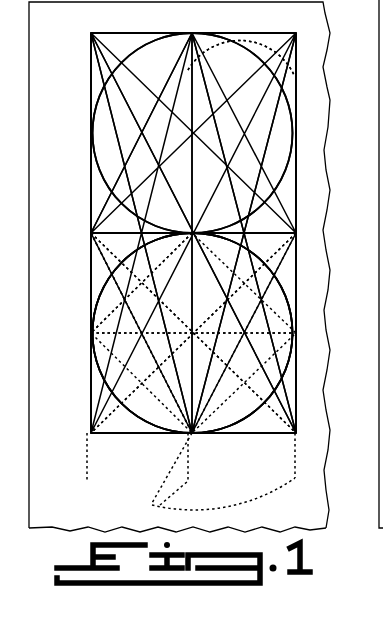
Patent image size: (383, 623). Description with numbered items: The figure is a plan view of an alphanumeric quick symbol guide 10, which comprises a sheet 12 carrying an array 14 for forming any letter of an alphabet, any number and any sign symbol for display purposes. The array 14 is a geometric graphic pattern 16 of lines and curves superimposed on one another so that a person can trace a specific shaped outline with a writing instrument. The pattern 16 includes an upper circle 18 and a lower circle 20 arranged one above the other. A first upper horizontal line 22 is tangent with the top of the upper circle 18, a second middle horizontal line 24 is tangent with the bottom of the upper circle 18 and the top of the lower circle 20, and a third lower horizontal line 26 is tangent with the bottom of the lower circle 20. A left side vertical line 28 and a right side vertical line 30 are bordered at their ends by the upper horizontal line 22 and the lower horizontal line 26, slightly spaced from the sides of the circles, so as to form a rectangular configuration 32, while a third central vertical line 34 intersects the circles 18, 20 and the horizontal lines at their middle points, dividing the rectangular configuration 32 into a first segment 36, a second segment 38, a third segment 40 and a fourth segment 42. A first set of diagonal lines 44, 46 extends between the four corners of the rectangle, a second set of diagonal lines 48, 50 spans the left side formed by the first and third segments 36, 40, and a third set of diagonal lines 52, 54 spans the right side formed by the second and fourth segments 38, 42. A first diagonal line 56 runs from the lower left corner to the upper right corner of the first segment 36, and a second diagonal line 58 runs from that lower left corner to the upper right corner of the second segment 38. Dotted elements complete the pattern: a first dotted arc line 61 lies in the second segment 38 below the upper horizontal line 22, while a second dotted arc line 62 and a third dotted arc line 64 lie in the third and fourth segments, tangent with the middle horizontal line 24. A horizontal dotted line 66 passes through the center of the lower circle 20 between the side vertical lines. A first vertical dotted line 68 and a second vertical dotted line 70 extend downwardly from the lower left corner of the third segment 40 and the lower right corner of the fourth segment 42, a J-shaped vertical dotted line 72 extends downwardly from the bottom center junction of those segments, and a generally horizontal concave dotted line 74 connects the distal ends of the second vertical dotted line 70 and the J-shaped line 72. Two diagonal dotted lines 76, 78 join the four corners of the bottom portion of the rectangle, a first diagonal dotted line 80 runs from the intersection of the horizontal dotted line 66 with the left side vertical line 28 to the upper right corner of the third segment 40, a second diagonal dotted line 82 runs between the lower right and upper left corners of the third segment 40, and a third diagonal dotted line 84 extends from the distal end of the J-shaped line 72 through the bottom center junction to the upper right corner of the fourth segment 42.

The alphanumeric quick symbol guide 10 is at (338, 35).
The sheet 12 is at (313, 495).
The array 14 is at (301, 157).
The geometric graphic pattern 16 is at (301, 200).
The upper circle 18 is at (292, 111).
The lower circle 20 is at (298, 296).
The first upper horizontal line 22 is at (154, 32).
The second middle horizontal line 24 is at (117, 232).
The third lower horizontal line 26 is at (250, 434).
The left side vertical line 28 is at (90, 158).
The right side vertical line 30 is at (298, 377).
The rectangular configuration 32 is at (301, 355).
The third central vertical line 34 is at (190, 97).
The first segment 36 is at (89, 75).
The second segment 38 is at (301, 133).
The third segment 40 is at (88, 418).
The fourth segment 42 is at (302, 415).
The diagonal line of first set 44 is at (105, 53).
The diagonal line of first set 46 is at (289, 53).
The diagonal line of second set 48 is at (108, 112).
The diagonal line of second set 50 is at (106, 356).
The diagonal line of third set 52 is at (297, 78).
The diagonal line of third set 54 is at (294, 388).
The first diagonal line 56 is at (110, 194).
The second diagonal line 58 is at (238, 92).
The first dotted arc line 61 is at (247, 41).
The second dotted arc line 62 is at (91, 253).
The third dotted arc line 64 is at (298, 253).
The horizontal dotted line 66 is at (104, 316).
The first vertical dotted line 68 is at (85, 463).
The second vertical dotted line 70 is at (296, 460).
The J-shaped vertical dotted line 72 is at (190, 481).
The horizontal concave dotted line 74 is at (259, 495).
The diagonal dotted line 76 is at (107, 418).
The diagonal dotted line 78 is at (235, 377).
The first diagonal dotted line 80 is at (114, 306).
The second diagonal dotted line 82 is at (175, 405).
The third diagonal dotted line 84 is at (165, 478).